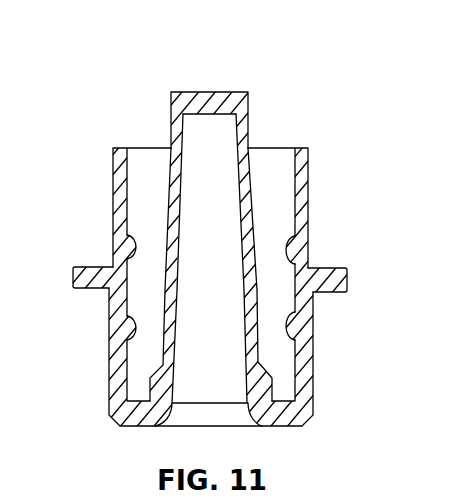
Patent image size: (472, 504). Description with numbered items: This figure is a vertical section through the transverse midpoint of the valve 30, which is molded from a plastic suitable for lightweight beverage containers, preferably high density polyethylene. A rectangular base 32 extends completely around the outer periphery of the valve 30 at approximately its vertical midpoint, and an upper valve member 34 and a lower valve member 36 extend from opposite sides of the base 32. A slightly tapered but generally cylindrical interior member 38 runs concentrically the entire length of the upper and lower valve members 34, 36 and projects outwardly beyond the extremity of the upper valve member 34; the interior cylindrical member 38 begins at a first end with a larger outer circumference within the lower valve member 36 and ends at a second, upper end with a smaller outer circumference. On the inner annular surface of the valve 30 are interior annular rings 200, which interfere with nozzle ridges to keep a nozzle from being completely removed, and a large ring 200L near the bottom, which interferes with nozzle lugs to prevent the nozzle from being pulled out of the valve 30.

The valve 30 is at (323, 128).
The base 32 is at (347, 277).
The upper valve member 34 is at (248, 117).
The lower valve member 36 is at (313, 367).
The interior cylindrical member 38 is at (210, 92).
The interior annular rings 200 is at (130, 242).
The large ring 200L is at (128, 327).